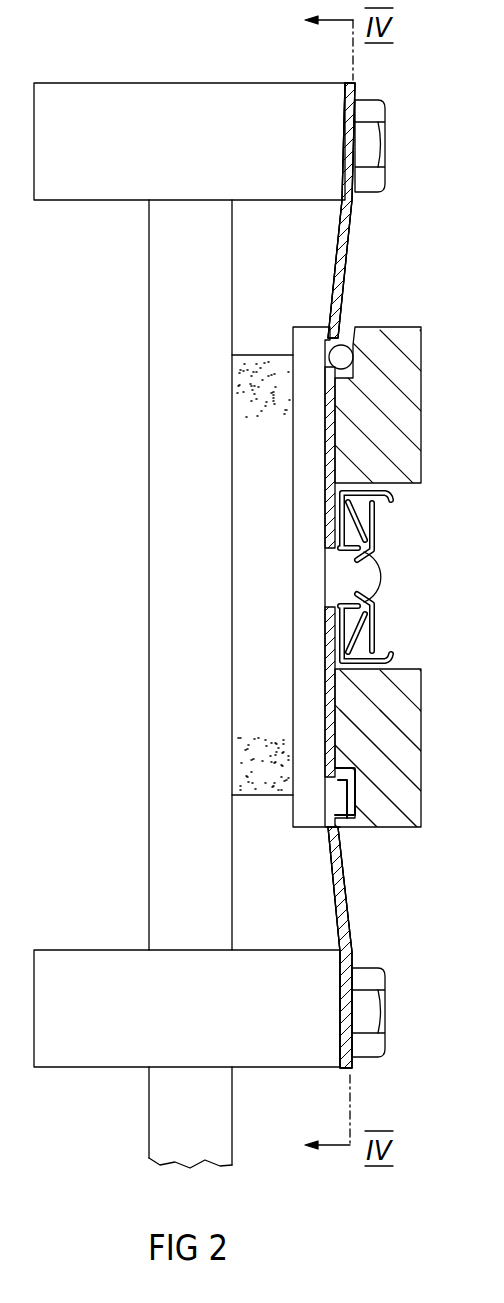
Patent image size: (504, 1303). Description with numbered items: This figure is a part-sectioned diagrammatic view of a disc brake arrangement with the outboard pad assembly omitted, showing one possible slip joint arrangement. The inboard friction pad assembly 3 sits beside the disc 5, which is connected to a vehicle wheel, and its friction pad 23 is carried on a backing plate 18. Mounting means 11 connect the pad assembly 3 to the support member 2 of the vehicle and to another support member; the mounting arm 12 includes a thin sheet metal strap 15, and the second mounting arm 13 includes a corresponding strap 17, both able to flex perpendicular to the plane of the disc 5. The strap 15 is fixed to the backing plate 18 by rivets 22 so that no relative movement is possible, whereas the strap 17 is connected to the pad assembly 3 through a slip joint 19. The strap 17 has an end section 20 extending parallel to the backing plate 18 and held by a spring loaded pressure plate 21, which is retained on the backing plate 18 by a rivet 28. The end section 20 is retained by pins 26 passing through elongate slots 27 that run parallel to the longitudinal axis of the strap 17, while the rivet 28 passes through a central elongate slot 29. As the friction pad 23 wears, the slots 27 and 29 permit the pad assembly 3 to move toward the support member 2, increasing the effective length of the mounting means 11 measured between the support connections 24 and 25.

The support member 2 is at (227, 132).
The inboard friction pad assembly 3 is at (285, 335).
The disc 5 is at (212, 882).
The mounting means 11 is at (364, 223).
The mounting arm 12 is at (326, 278).
The second mounting arm 13 is at (360, 916).
The strap 15 is at (352, 258).
The strap 17 is at (348, 937).
The backing plate 18 is at (310, 442).
The slip joint 19 is at (419, 577).
The end section 20 is at (338, 716).
The spring loaded pressure plate 21 is at (388, 496).
The rivets 22 is at (350, 357).
The friction pad 23 is at (245, 665).
The support connection 24 is at (372, 150).
The support connection 25 is at (368, 1048).
The pins 26 is at (342, 797).
The elongate slots 27 is at (333, 832).
The rivet 28 is at (365, 577).
The central elongate slot 29 is at (325, 548).